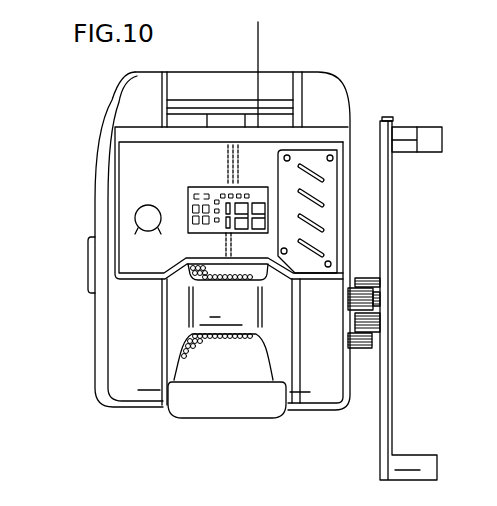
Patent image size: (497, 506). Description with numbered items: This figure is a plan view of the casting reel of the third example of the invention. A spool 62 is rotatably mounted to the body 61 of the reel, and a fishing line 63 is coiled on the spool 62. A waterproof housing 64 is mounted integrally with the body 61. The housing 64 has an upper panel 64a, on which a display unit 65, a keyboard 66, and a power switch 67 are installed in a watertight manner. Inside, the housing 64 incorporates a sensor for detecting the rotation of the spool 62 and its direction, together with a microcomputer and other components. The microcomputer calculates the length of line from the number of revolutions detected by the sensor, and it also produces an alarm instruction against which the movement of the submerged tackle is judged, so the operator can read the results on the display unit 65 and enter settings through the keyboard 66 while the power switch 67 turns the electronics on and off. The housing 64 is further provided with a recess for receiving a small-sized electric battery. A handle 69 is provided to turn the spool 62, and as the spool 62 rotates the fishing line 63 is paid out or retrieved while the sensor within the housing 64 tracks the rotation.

The body 61 is at (100, 307).
The spool 62 is at (183, 310).
The fishing line 63 is at (258, 58).
The waterproof housing 64 is at (113, 188).
The upper panel 64a is at (130, 167).
The display unit 65 is at (205, 187).
The keyboard 66 is at (330, 228).
The power switch 67 is at (168, 203).
The handle 69 is at (387, 117).